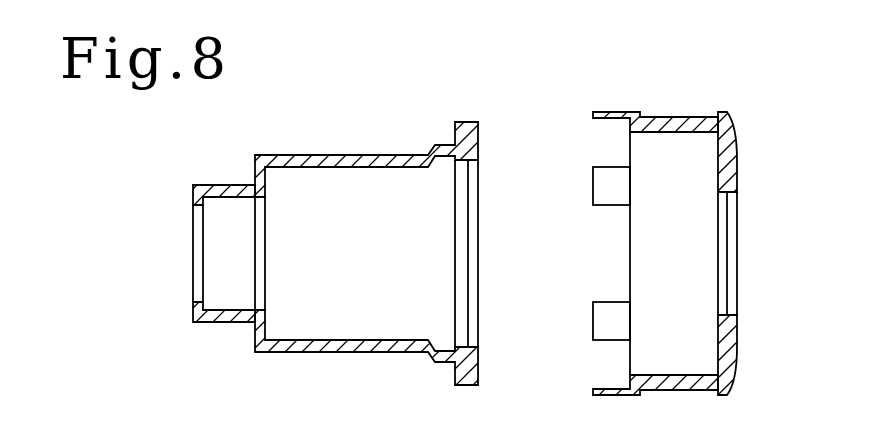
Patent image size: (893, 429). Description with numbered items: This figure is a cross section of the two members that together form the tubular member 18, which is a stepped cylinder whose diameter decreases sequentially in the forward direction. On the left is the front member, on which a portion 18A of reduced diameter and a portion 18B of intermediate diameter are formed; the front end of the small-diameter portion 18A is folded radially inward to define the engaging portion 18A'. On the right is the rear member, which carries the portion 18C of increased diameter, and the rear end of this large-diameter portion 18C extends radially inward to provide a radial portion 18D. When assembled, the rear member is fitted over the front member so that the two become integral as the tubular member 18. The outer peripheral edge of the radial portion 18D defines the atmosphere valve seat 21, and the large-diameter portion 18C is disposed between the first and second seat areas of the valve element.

The tubular member 18 is at (569, 95).
The portion of small diameter 18A is at (446, 250).
The engaging portion 18A' is at (155, 249).
The portion of intermediate diameter 18B is at (380, 155).
The portion of large diameter 18C is at (684, 110).
The radial portion 18D is at (733, 173).
The atmosphere valve seat 21 is at (735, 130).